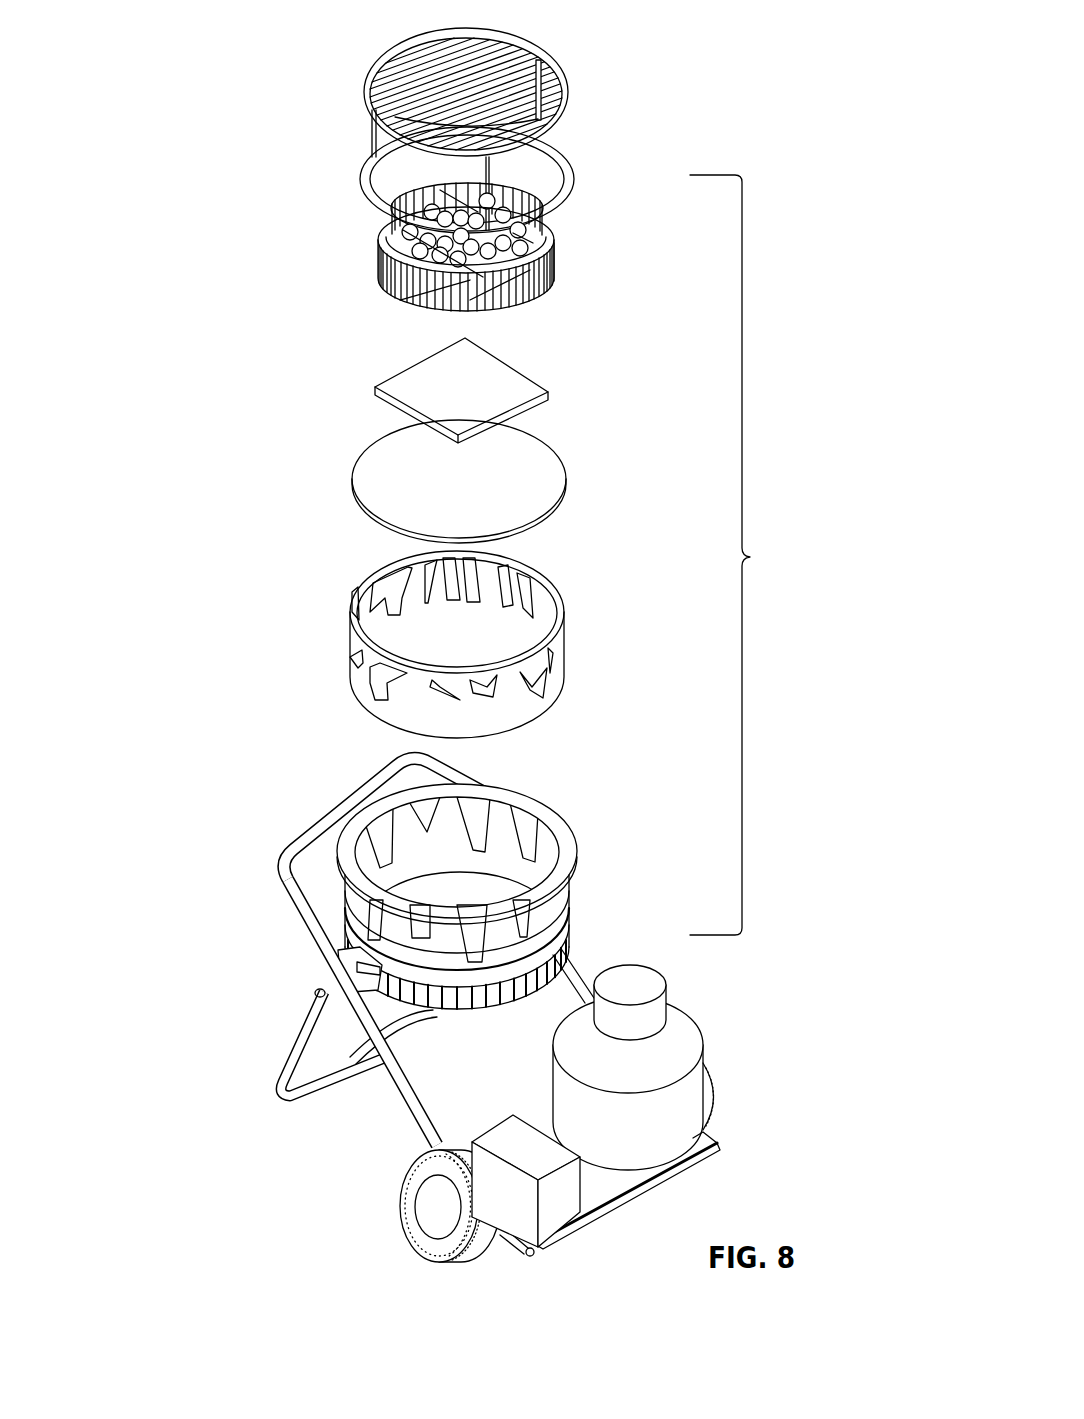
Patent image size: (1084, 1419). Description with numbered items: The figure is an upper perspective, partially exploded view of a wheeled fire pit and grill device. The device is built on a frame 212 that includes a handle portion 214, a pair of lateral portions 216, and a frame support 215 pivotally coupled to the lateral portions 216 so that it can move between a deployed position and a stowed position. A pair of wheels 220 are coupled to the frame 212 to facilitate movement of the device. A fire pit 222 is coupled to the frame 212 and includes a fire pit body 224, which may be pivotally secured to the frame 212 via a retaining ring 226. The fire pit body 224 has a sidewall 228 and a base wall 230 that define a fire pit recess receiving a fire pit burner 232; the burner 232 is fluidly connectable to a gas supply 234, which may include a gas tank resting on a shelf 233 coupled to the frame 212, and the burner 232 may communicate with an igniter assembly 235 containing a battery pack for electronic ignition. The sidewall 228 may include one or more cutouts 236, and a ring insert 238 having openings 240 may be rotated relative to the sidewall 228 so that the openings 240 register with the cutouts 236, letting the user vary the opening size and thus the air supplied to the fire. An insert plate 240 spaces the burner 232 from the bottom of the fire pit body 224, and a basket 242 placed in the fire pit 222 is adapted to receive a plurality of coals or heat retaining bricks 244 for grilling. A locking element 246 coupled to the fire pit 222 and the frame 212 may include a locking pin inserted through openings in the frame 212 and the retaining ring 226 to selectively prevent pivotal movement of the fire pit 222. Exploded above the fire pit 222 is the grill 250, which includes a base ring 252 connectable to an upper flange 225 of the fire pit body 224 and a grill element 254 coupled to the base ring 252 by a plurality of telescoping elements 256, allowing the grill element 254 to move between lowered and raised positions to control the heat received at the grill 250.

The frame 212 is at (482, 1016).
The handle portion 214 is at (320, 793).
The frame support 215 is at (288, 1063).
The lateral portions 216 is at (400, 1087).
The wheels 220 is at (423, 1233).
The fire pit 222 is at (750, 555).
The fire pit body 224 is at (497, 904).
The upper flange 225 is at (564, 827).
The retaining ring 226 is at (500, 975).
The sidewall 228 is at (558, 913).
The base wall 230 is at (461, 1010).
The fire pit burner 232 is at (510, 374).
The shelf 233 is at (625, 1193).
The gas supply 234 is at (702, 1004).
The igniter assembly 235 is at (567, 1210).
The cutouts 236 is at (527, 820).
The ring insert 238 is at (560, 590).
The openings 240 is at (552, 466).
The basket 242 is at (468, 247).
The heat retaining bricks 244 is at (387, 244).
The locking element 246 is at (352, 981).
The grill 250 is at (498, 122).
The base ring 252 is at (565, 166).
The grill element 254 is at (417, 60).
The telescoping elements 256 is at (370, 137).